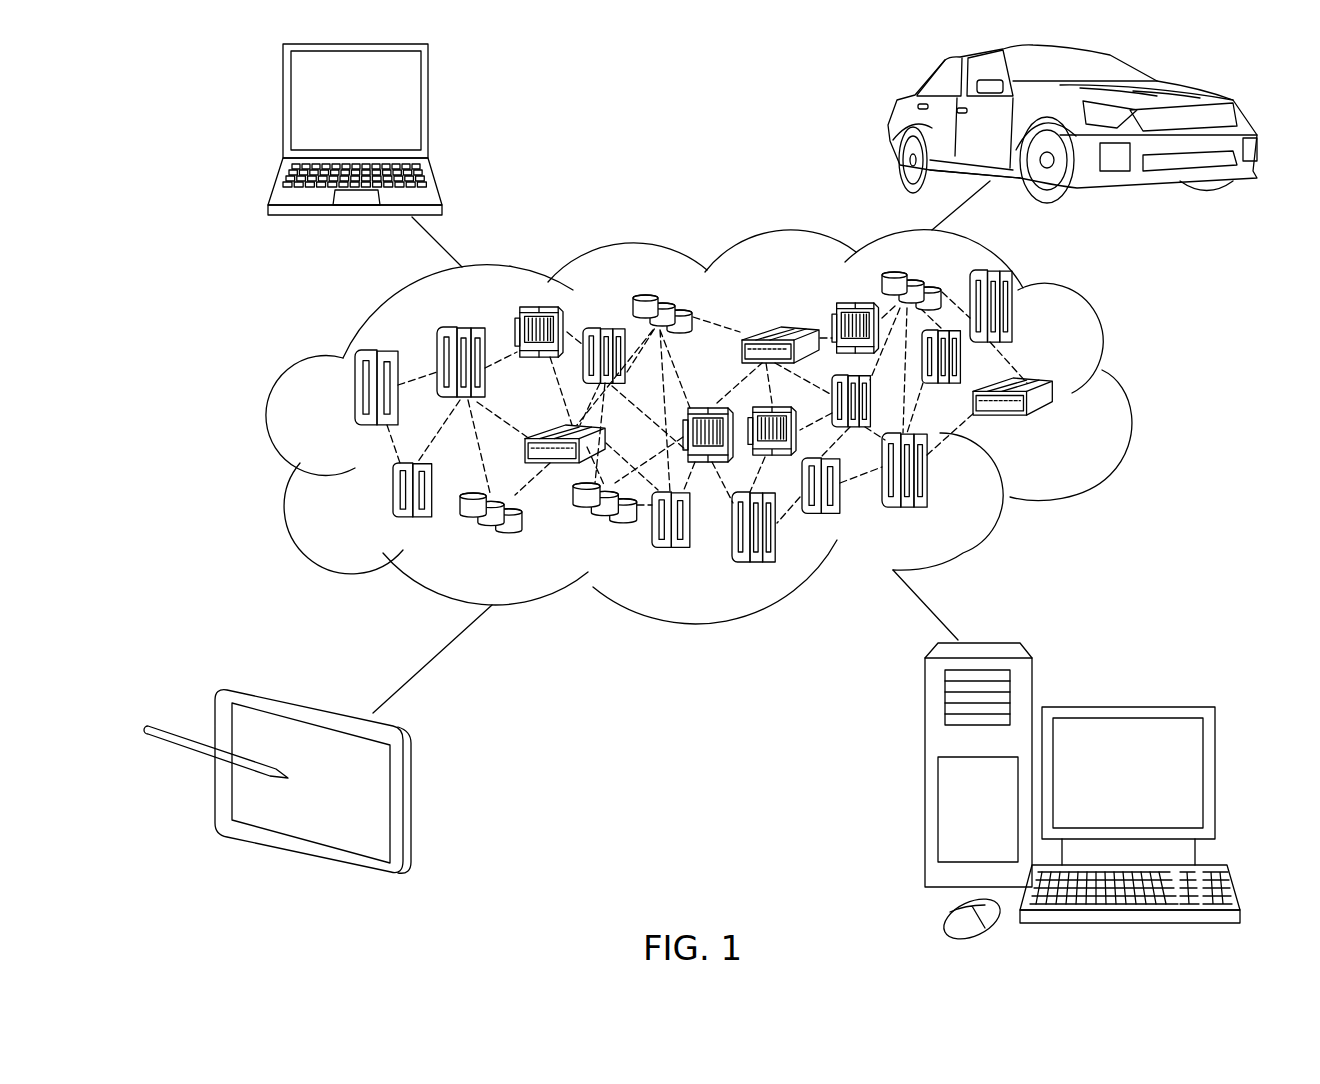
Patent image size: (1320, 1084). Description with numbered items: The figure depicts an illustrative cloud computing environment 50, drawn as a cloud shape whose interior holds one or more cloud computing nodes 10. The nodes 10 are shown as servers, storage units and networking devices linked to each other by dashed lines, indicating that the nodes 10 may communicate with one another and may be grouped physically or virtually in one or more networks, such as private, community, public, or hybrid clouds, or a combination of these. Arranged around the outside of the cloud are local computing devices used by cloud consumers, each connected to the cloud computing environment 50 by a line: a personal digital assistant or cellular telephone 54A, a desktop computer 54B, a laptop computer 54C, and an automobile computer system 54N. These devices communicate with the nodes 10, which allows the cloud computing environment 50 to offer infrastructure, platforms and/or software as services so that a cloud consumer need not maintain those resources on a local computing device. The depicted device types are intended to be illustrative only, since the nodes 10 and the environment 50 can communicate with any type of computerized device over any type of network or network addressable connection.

The cloud computing environment 50 is at (1125, 398).
The cloud computing nodes 10 is at (1062, 430).
The personal digital assistant (PDA) or cellular telephone 54A is at (417, 803).
The desktop computer 54B is at (1125, 707).
The laptop computer 54C is at (428, 110).
The automobile computer system 54N is at (893, 126).